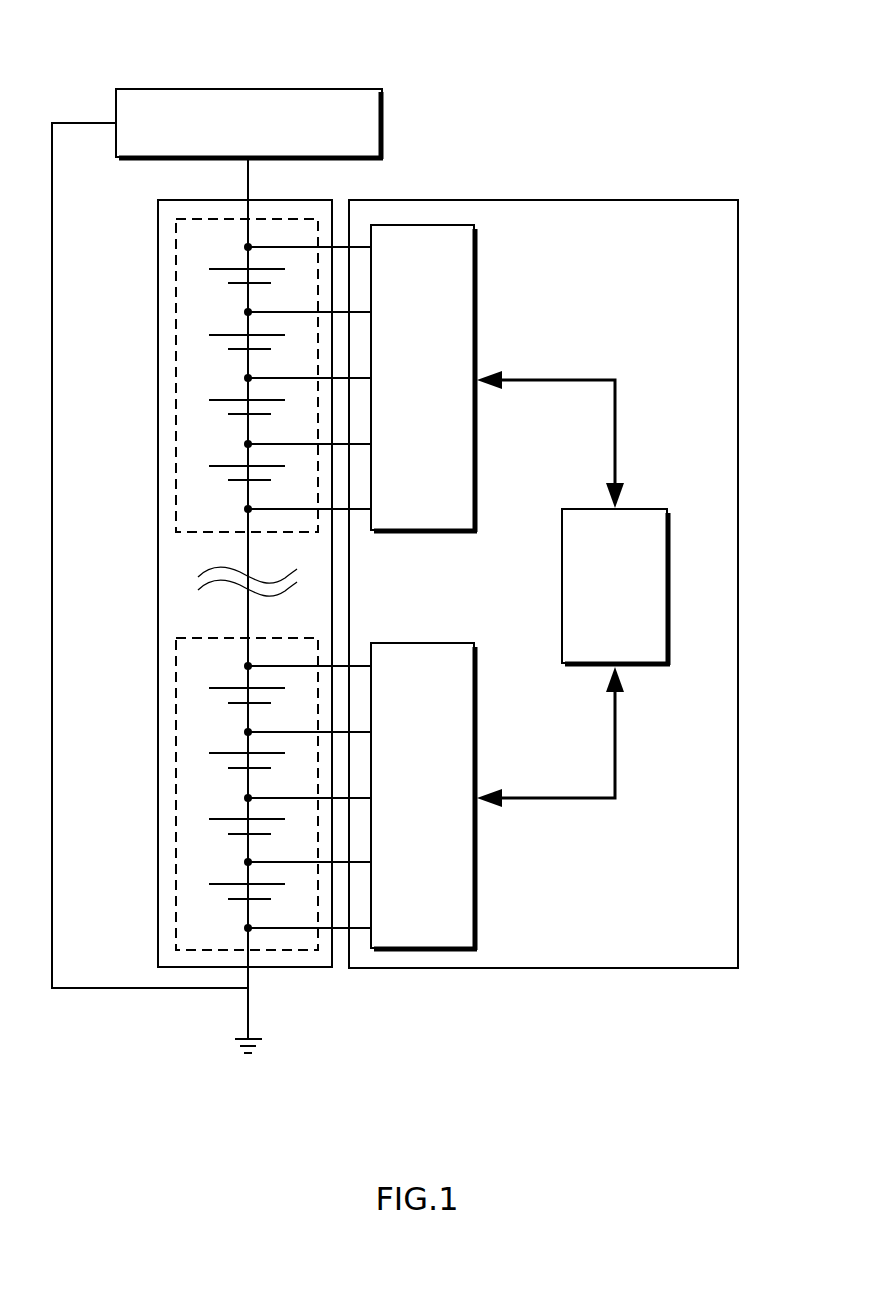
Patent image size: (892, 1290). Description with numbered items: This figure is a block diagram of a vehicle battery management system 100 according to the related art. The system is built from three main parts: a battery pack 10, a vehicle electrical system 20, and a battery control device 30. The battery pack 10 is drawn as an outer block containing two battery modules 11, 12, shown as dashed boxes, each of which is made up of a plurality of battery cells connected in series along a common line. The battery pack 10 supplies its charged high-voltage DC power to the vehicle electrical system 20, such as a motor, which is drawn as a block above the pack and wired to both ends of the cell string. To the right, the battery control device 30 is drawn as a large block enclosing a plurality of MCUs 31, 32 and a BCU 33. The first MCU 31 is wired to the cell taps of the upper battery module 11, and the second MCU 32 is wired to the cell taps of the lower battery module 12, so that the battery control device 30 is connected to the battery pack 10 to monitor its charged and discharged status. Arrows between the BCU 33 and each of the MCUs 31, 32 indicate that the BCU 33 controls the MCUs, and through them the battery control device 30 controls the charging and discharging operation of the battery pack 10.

The vehicle battery management system 100 is at (64, 45).
The battery pack 10 is at (158, 582).
The battery module 11 is at (176, 373).
The battery module 12 is at (176, 794).
The vehicle electrical system 20 is at (384, 126).
The battery control device 30 is at (640, 200).
The MCU 31 is at (477, 302).
The MCU 32 is at (477, 890).
The BCU 33 is at (671, 590).